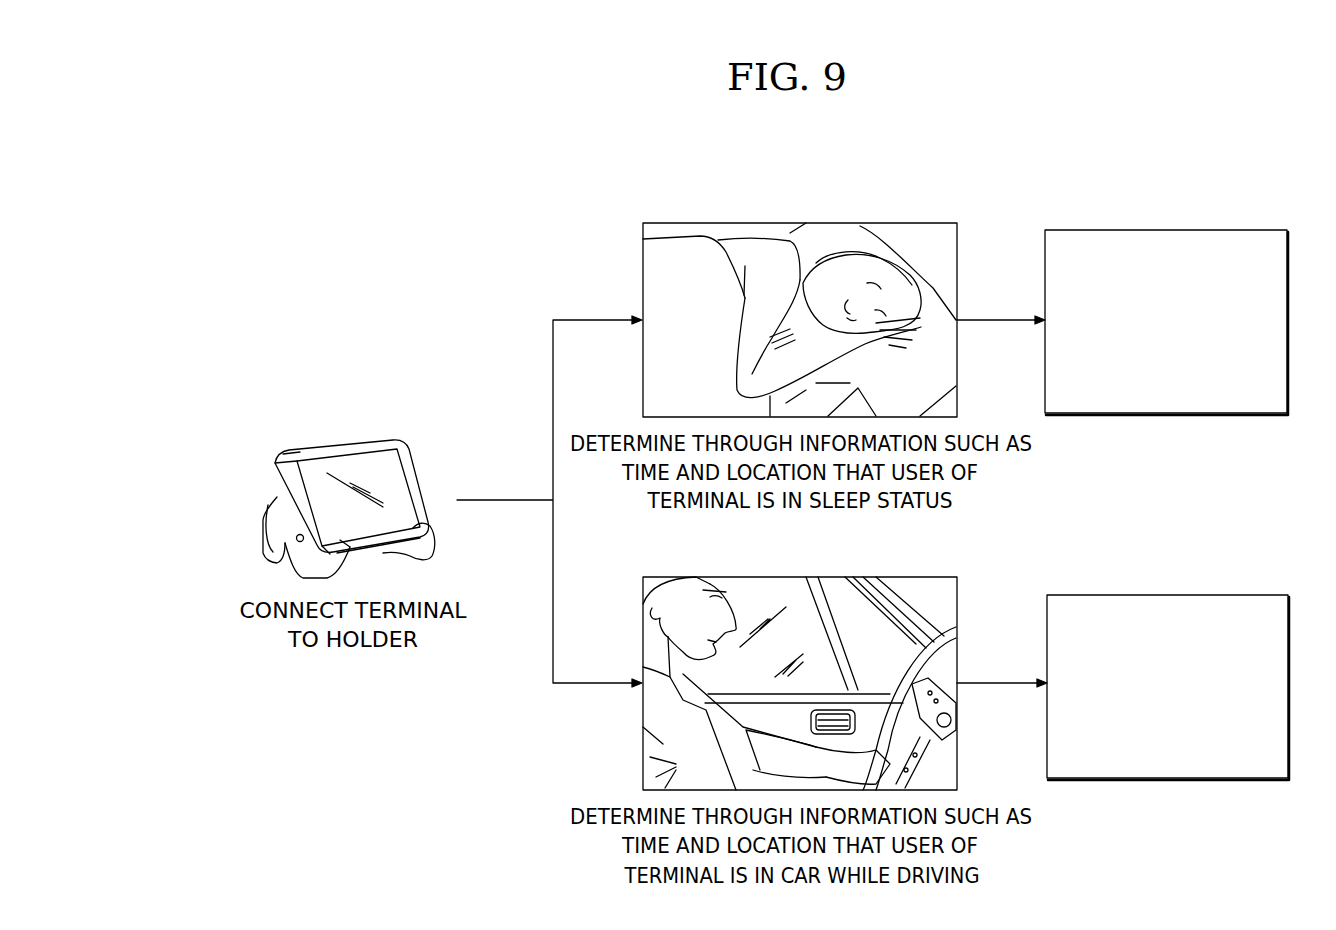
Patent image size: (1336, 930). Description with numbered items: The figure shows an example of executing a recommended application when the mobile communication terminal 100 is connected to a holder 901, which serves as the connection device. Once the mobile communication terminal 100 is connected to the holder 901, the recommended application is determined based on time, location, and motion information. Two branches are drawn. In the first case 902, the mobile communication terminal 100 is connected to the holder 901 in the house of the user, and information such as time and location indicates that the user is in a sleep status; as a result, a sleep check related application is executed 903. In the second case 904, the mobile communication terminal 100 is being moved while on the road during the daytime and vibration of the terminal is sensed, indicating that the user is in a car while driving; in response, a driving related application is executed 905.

The mobile communication terminal 100 is at (369, 445).
The holder 901 is at (269, 506).
The case of connection to holder in user's house 902 is at (800, 299).
The execution of sleep check related application 903 is at (1166, 298).
The case of movement on the road with sensed vibration 904 is at (800, 665).
The execution of driving related application 905 is at (1168, 661).